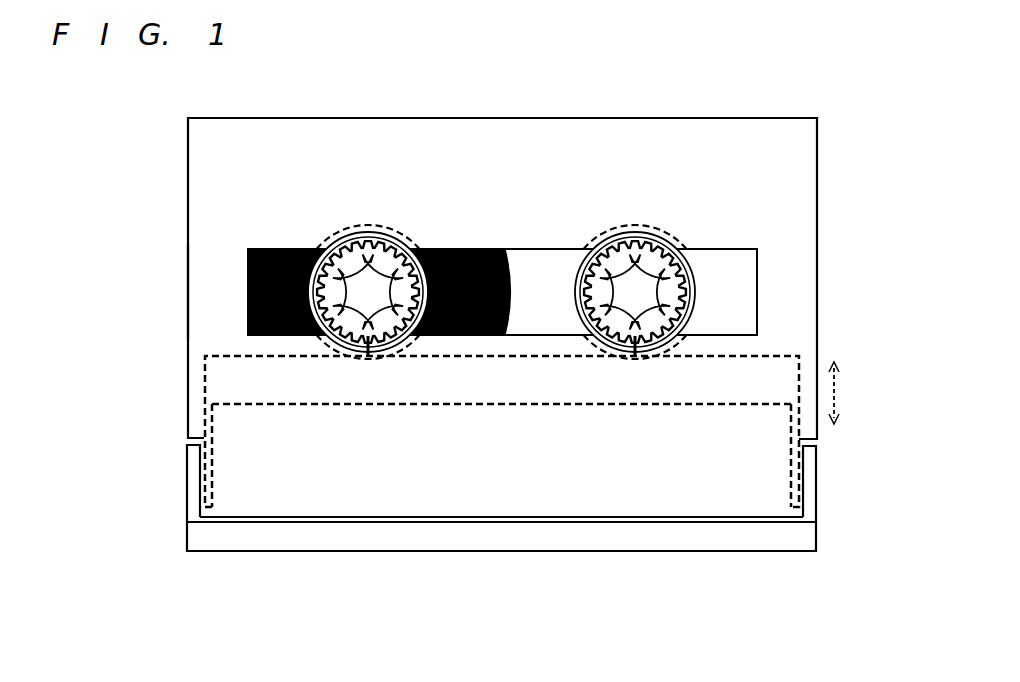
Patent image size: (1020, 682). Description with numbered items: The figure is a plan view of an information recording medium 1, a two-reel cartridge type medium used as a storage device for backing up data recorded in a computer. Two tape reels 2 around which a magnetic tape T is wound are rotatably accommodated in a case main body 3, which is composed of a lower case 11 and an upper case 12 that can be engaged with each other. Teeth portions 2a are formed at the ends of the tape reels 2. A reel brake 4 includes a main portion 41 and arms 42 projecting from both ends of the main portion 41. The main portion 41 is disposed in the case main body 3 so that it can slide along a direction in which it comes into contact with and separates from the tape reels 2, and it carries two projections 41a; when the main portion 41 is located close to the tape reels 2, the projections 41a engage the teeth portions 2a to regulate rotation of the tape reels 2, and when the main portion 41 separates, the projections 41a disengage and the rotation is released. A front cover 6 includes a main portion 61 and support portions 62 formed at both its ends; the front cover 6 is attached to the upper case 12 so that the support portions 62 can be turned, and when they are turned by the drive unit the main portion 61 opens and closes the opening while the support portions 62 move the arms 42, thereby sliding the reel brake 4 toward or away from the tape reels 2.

The information recording medium 1 is at (540, 95).
The case main body 3 is at (172, 223).
The upper case 12 is at (195, 270).
The lower case 11 is at (188, 318).
The magnetic tape T is at (481, 250).
The tape reel 2 is at (410, 250).
The teeth portion 2a is at (340, 250).
The projection 41a is at (366, 357).
The reel brake 4 is at (490, 410).
The main portion 41 is at (549, 390).
The arm 42 is at (216, 470).
The front cover 6 is at (832, 532).
The support portion 62 is at (186, 490).
The main portion 61 is at (507, 545).